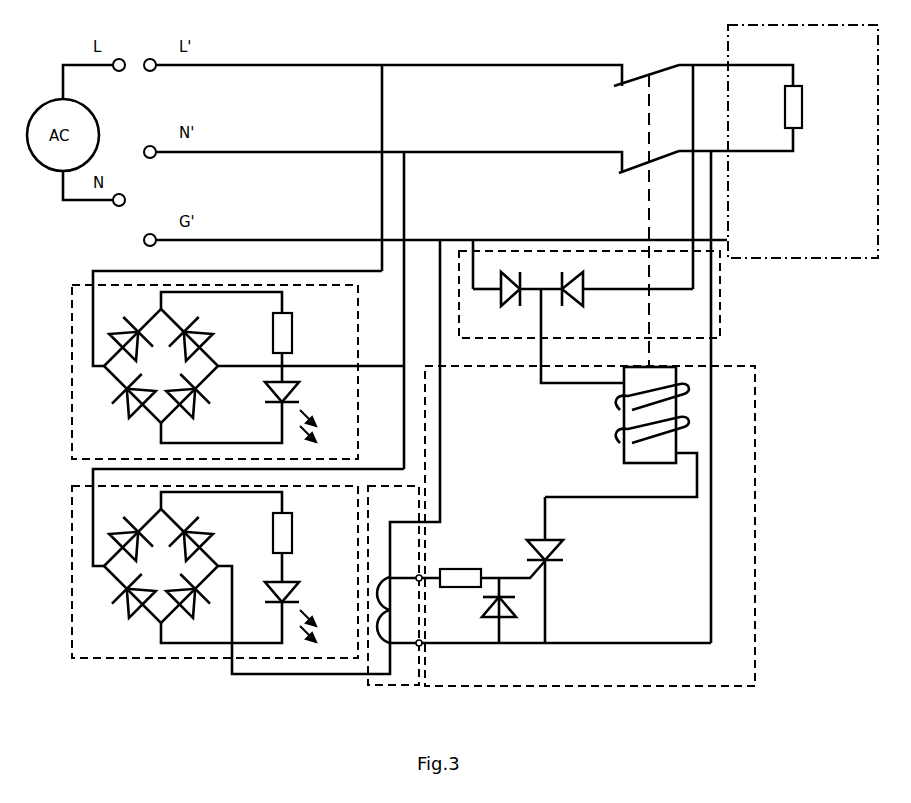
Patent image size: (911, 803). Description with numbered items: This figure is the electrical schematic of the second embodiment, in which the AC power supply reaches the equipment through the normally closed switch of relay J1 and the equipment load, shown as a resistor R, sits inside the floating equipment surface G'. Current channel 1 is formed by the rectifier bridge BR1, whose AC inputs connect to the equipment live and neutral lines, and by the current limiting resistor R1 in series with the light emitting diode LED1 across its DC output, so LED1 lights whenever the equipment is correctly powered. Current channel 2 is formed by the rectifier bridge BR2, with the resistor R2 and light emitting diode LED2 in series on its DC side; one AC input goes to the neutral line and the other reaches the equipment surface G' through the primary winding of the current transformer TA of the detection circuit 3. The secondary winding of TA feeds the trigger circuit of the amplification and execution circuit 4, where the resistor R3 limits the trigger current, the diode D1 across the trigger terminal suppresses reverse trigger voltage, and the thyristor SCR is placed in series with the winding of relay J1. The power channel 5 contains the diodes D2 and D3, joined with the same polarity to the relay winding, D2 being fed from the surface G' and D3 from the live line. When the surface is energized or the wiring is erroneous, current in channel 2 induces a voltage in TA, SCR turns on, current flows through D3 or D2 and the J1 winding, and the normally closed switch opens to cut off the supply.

The current channel 1 is at (220, 372).
The current channel 2 is at (197, 577).
The detection circuit 3 is at (527, 601).
The amplification and execution circuit 4 is at (604, 526).
The power channel 5 is at (588, 317).
The load resistor R is at (805, 107).
The equipment surface G' is at (803, 168).
The rectifier bridge BR1 is at (179, 366).
The resistor R1 is at (300, 333).
The light emitting diode LED1 is at (304, 412).
The rectifier bridge BR2 is at (179, 566).
The resistor R2 is at (300, 533).
The light emitting diode LED2 is at (304, 612).
The current transformer TA is at (544, 610).
The resistor R3 is at (459, 565).
The diode D1 is at (499, 627).
The thyristor SCR is at (545, 587).
The relay J1 is at (652, 431).
The diode D2 is at (508, 299).
The diode D3 is at (575, 299).